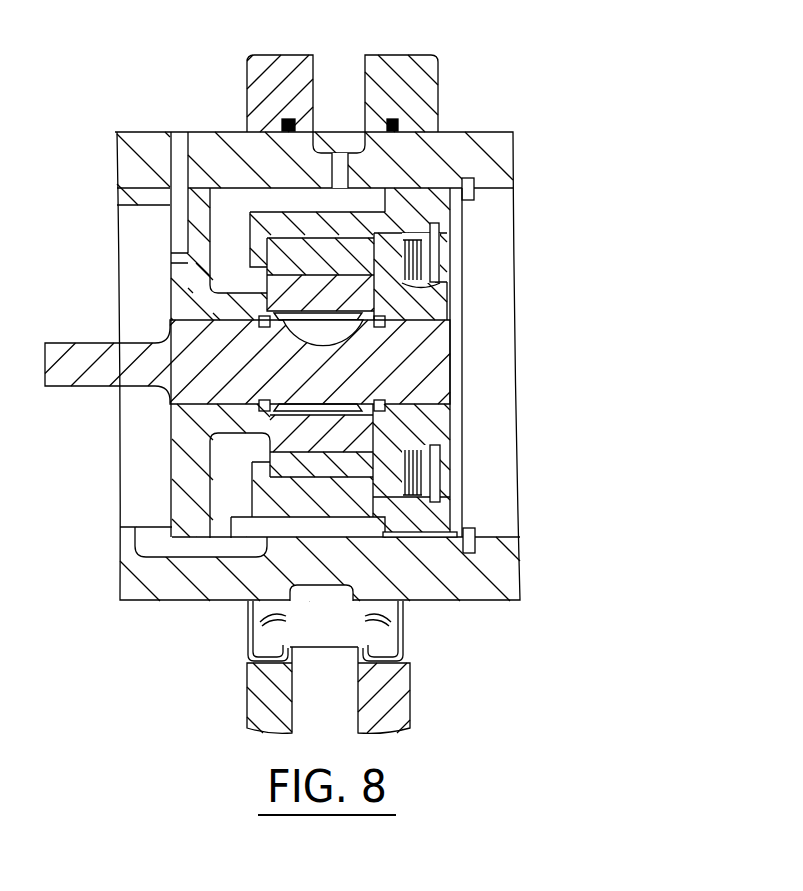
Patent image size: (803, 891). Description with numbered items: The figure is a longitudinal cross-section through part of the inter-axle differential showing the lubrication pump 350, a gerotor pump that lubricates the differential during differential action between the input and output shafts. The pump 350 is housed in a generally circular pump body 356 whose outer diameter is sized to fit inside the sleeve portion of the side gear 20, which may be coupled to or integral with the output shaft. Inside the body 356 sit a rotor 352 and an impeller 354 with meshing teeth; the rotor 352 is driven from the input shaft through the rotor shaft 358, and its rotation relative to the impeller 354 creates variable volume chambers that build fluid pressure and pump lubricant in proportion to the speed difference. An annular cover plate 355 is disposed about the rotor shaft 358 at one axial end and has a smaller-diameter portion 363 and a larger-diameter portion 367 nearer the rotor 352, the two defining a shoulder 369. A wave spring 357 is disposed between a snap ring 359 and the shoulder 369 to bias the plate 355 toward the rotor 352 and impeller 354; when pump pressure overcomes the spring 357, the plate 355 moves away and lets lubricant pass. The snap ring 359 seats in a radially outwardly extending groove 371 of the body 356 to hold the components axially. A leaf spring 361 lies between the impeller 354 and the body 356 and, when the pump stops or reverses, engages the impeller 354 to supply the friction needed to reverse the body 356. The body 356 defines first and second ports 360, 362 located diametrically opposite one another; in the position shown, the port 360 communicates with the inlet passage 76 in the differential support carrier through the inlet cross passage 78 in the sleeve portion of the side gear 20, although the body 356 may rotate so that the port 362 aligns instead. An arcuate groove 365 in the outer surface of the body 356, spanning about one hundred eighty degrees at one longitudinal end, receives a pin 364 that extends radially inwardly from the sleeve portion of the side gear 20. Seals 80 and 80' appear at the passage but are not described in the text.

The side gear 20 is at (497, 163).
The inlet passage 76 is at (347, 62).
The inlet cross passage 78 is at (342, 175).
The O-ring seal 80 is at (333, 70).
The seal clip 80' is at (358, 659).
The lubrication pump 350 is at (493, 337).
The rotor 352 is at (363, 433).
The impeller 354 is at (447, 300).
The cover plate 355 is at (440, 412).
The pump body 356 is at (190, 423).
The spring 357 is at (418, 468).
The rotor shaft 358 is at (70, 355).
The snap ring 359 is at (438, 457).
The first port 360 is at (232, 198).
The leaf spring 361 is at (452, 533).
The second port 362 is at (237, 527).
The first diameter portion 363 is at (440, 293).
The pin 364 is at (178, 142).
The arcuate groove 365 is at (173, 250).
The second diameter portion 367 is at (387, 247).
The shoulder 369 is at (447, 277).
The groove 371 is at (462, 235).